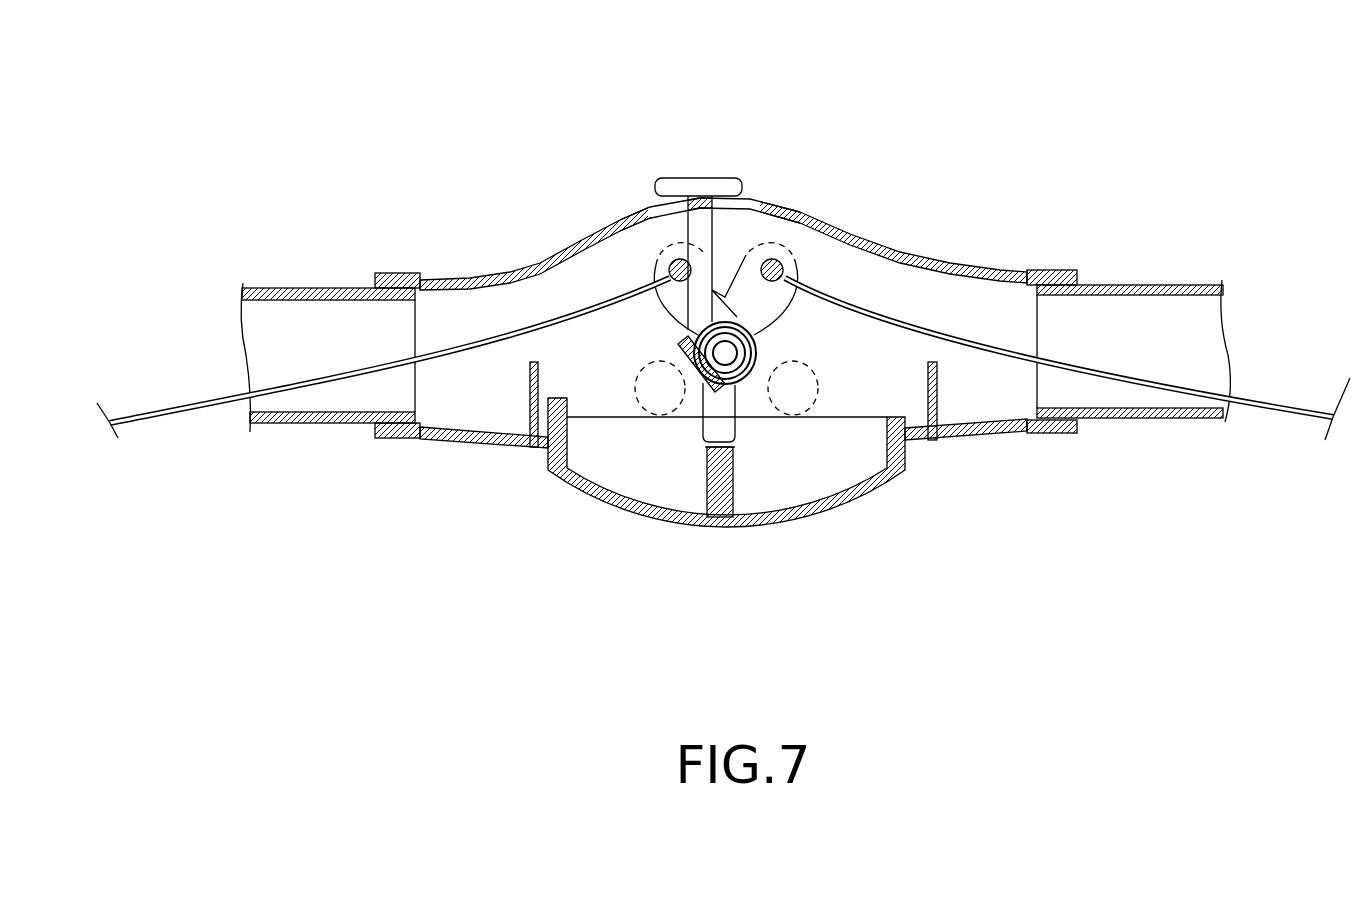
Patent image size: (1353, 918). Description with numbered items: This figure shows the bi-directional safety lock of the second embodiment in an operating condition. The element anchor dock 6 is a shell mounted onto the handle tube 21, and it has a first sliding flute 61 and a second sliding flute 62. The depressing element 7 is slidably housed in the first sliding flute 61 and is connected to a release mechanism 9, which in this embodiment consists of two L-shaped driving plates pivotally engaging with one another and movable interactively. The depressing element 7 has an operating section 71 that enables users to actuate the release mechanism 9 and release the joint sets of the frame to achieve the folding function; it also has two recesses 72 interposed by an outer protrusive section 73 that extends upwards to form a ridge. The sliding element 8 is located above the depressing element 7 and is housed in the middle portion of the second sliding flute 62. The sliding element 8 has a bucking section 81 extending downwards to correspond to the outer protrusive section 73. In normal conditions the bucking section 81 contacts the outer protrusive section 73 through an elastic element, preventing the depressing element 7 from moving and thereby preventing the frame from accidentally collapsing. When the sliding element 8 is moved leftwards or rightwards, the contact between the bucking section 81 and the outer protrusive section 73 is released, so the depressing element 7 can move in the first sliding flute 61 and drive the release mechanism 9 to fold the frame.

The element anchor dock 6 is at (893, 247).
The first sliding flute 61 is at (528, 445).
The second sliding flute 62 is at (653, 203).
The depressing element 7 is at (552, 470).
The operating section 71 is at (718, 527).
The recesses 72 is at (823, 463).
The outer protrusive section 73 is at (730, 457).
The sliding element 8 is at (722, 178).
The bucking section 81 is at (703, 435).
The release mechanism 9 is at (800, 252).
The handle tube 21 is at (1163, 308).